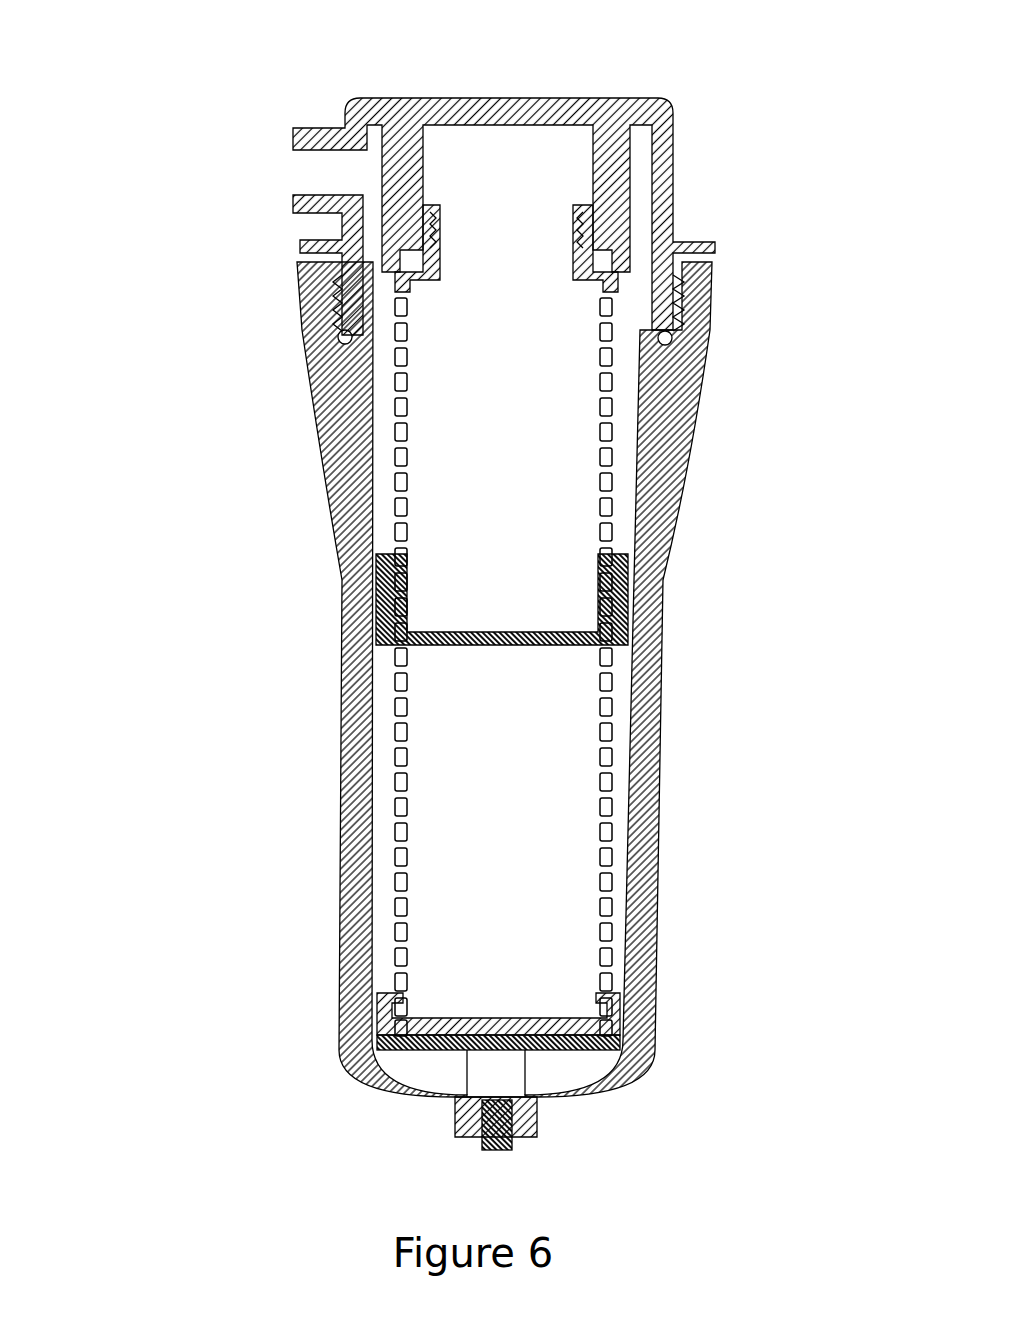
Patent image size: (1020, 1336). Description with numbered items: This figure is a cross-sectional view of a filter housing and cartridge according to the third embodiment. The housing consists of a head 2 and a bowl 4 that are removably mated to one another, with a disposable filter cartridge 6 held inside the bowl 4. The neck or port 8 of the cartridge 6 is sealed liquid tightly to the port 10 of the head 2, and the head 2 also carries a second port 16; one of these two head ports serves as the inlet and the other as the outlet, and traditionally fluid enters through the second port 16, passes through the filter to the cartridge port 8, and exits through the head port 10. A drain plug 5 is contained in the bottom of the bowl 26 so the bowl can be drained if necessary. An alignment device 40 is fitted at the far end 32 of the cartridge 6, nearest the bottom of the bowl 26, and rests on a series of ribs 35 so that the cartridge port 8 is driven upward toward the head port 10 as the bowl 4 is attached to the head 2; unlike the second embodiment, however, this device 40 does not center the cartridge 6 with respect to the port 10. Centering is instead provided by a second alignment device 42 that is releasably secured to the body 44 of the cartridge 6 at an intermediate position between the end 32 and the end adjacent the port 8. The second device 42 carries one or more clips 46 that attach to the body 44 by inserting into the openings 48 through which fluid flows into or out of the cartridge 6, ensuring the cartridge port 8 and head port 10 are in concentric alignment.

The head 2 is at (530, 98).
The bowl 4 is at (647, 942).
The drain plug 5 is at (492, 1150).
The filter cartridge 6 is at (603, 773).
The port 8 is at (500, 285).
The port 10 is at (487, 175).
The second port 16 is at (305, 172).
The bottom of the bowl 26 is at (543, 1115).
The far end 32 is at (495, 990).
The ribs 35 is at (433, 1067).
The alignment device 40 is at (583, 1052).
The second alignment device 42 is at (463, 645).
The body 44 is at (397, 523).
The clips 46 is at (602, 557).
The openings 48 is at (603, 427).